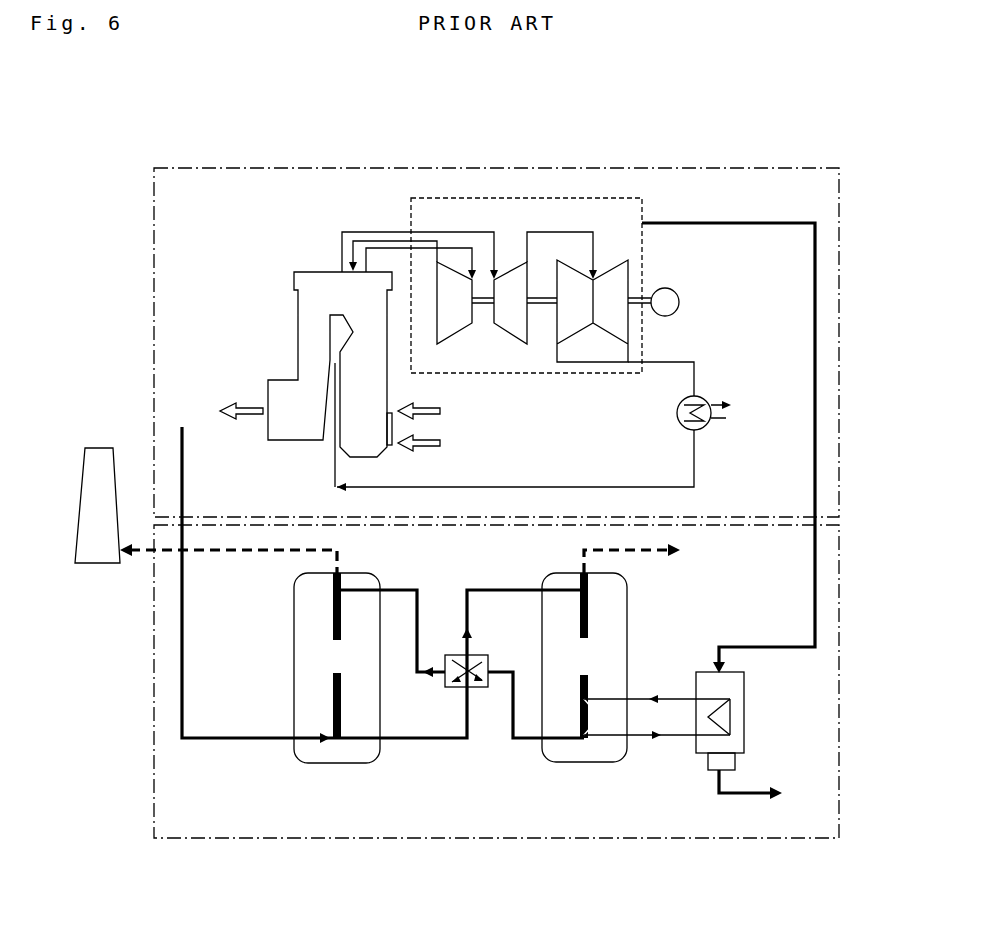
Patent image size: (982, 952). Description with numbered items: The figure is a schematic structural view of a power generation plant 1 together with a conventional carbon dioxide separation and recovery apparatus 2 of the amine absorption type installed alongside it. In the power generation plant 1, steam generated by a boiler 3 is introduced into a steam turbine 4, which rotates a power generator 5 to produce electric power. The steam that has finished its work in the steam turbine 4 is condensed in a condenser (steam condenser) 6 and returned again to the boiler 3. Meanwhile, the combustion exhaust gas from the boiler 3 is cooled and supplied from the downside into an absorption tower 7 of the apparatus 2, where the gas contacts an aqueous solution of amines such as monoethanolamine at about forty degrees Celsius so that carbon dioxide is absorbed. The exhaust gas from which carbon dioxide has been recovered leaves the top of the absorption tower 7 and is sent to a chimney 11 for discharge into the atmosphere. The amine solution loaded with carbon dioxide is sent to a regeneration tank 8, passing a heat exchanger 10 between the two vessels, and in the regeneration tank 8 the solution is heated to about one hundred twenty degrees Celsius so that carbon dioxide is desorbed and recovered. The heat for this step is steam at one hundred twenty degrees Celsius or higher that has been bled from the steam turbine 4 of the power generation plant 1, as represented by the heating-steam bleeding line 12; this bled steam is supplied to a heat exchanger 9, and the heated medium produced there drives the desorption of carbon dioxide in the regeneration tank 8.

The power generation plant 1 is at (327, 168).
The CO2 recovery apparatus 2 is at (651, 838).
The boiler 3 is at (296, 317).
The steam turbine 4 is at (468, 198).
The power generator 5 is at (680, 300).
The condenser (steam condenser) 6 is at (706, 398).
The absorption tower 7 is at (295, 755).
The regeneration tank 8 is at (540, 757).
The heat exchanger 9 is at (744, 693).
The heat exchanger 10 is at (468, 663).
The chimney 11 is at (82, 480).
The heating-steam bleeding line 12 is at (768, 225).